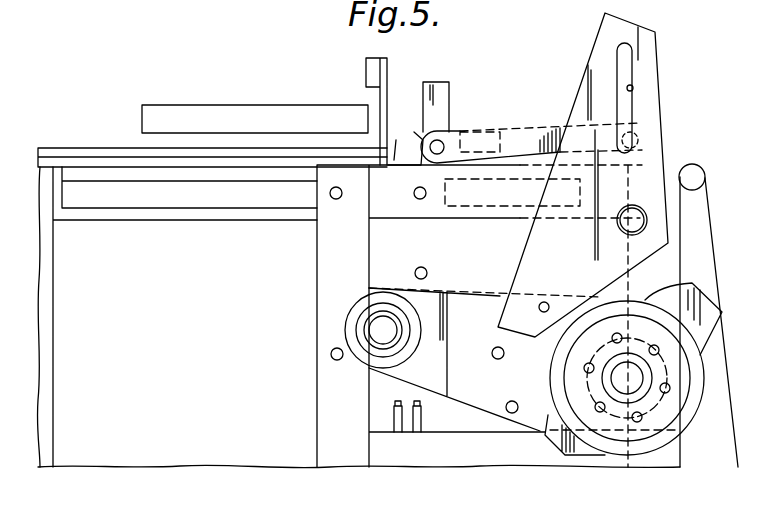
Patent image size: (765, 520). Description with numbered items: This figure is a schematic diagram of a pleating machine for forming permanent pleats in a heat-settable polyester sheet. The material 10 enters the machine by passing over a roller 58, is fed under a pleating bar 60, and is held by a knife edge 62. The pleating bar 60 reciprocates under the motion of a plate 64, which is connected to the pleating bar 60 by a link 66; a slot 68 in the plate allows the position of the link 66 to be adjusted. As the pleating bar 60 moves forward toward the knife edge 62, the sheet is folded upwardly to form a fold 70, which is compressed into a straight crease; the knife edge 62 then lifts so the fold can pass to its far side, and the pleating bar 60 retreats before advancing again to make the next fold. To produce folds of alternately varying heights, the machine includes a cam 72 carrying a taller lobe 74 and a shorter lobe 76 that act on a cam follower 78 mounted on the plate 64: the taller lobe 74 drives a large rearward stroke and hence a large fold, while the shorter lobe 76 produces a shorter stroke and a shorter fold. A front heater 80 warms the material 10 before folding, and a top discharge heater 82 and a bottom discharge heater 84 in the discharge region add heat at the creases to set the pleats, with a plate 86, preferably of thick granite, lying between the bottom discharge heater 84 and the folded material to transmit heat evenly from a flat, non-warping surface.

The material 10 is at (733, 425).
The roller 58 is at (692, 172).
The pleating bar 60 is at (442, 93).
The knife edge 62 is at (390, 93).
The plate 64 is at (598, 72).
The link 66 is at (522, 135).
The slot 68 is at (630, 85).
The fold 70 is at (400, 157).
The cam 72 is at (695, 352).
The taller lobe 74 is at (702, 302).
The shorter lobe 76 is at (585, 455).
The cam follower 78 is at (540, 303).
The front heater 80 is at (497, 197).
The top discharge heater 82 is at (240, 118).
The bottom discharge heater 84 is at (212, 195).
The plate 86 is at (108, 172).